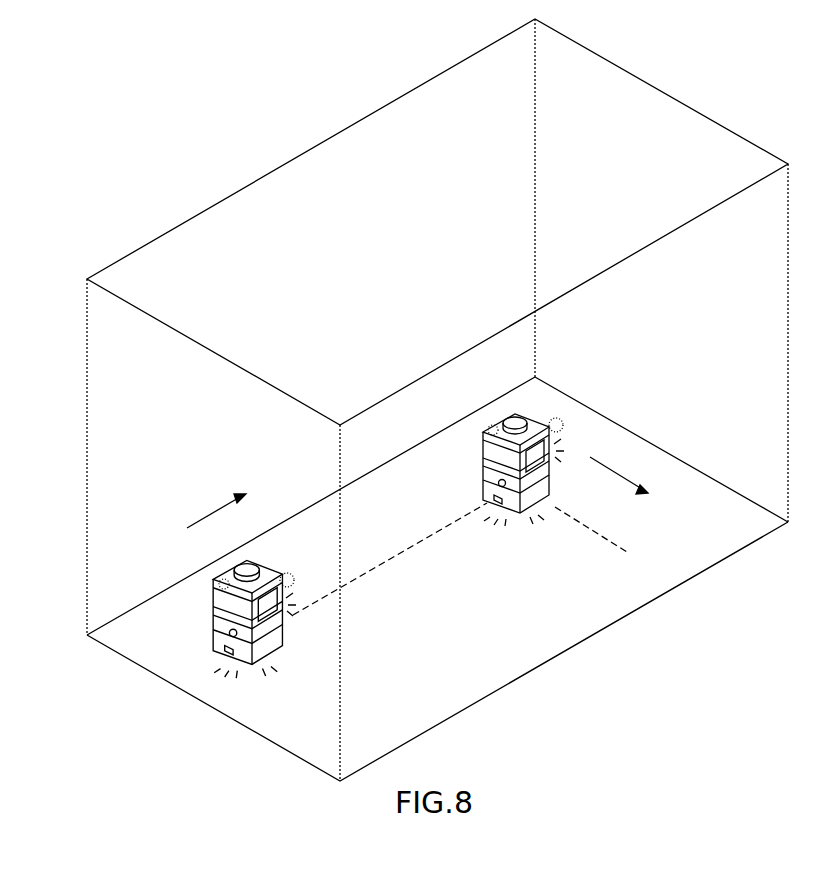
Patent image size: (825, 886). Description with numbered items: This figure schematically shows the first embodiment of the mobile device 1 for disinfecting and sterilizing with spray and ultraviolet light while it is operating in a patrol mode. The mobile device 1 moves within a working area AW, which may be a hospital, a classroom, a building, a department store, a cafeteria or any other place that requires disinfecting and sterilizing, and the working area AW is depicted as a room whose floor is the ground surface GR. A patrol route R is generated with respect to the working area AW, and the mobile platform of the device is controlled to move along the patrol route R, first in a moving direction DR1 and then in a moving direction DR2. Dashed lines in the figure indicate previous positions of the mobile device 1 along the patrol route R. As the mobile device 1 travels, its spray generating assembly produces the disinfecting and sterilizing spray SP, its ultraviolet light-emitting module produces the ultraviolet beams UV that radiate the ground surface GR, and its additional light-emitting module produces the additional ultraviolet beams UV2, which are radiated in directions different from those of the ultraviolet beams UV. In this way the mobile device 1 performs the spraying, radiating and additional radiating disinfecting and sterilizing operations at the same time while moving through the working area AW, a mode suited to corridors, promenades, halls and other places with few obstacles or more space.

The working area AW is at (320, 173).
The ground surface GR is at (562, 628).
The patrol route R is at (600, 540).
The moving direction DR1 is at (213, 507).
The moving direction DR2 is at (619, 470).
The ultraviolet beams UV is at (381, 587).
The mobile device 1 is at (482, 447).
The disinfecting and sterilizing spray SP is at (558, 418).
The additional ultraviolet beams UV2 is at (562, 452).